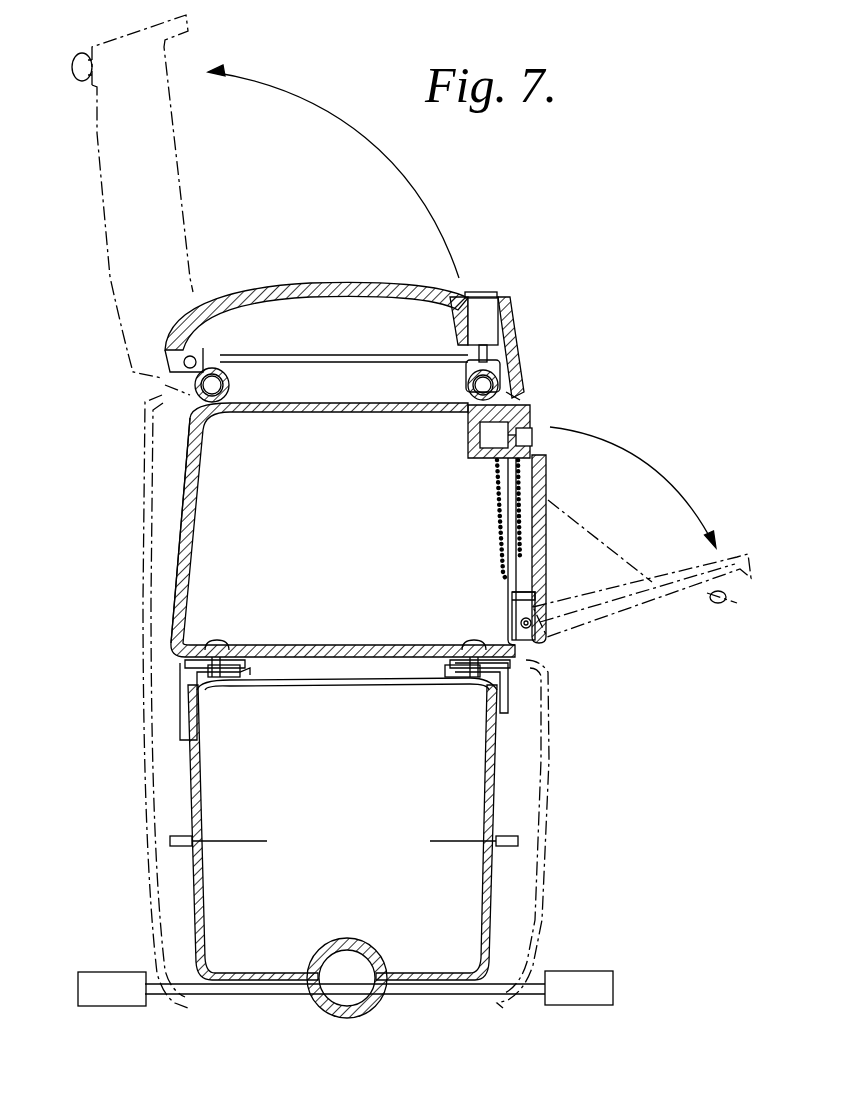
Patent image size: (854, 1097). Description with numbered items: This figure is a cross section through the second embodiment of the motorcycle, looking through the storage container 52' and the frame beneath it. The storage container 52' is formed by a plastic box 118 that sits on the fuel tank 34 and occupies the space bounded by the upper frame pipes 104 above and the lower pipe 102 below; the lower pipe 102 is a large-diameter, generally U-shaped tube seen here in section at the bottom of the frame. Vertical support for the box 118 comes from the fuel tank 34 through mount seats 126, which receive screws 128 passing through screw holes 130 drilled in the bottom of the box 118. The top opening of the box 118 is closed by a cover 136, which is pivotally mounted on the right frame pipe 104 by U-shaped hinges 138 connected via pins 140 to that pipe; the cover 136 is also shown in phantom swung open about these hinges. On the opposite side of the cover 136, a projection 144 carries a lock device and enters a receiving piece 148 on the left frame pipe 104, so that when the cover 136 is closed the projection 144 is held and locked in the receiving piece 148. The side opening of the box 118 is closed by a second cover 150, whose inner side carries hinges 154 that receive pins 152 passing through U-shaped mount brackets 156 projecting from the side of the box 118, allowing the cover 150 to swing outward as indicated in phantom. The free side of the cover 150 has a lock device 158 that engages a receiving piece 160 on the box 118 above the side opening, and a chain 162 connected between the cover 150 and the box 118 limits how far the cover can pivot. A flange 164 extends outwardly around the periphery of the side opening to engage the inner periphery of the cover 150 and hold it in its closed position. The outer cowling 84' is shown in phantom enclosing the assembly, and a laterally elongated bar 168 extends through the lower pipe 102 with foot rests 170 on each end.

The cover 136 is at (97, 208).
The pins 140 is at (485, 318).
The U-shaped hinges 138 is at (203, 360).
The projection 144 is at (453, 328).
The frame pipes 104 is at (230, 385).
The receiving piece 148 is at (472, 380).
The receiving piece 160 is at (478, 433).
The lock device 158 is at (540, 433).
The flange 164 is at (495, 477).
The chain 162 is at (495, 537).
The plastic box 118 is at (185, 543).
The storage container 52' is at (343, 530).
The cover 150 is at (547, 552).
The hinges 154 is at (545, 595).
The U-shaped mount brackets 156 is at (512, 600).
The pins 152 is at (532, 643).
The screws 128 is at (210, 640).
The screw holes 130 is at (227, 687).
The mount seats 126 is at (177, 695).
The lower tank 34 is at (357, 794).
The cowling 84' is at (343, 701).
The foot rests 170 is at (575, 972).
The bar 168 is at (458, 995).
The lower pipe 102 is at (350, 1018).